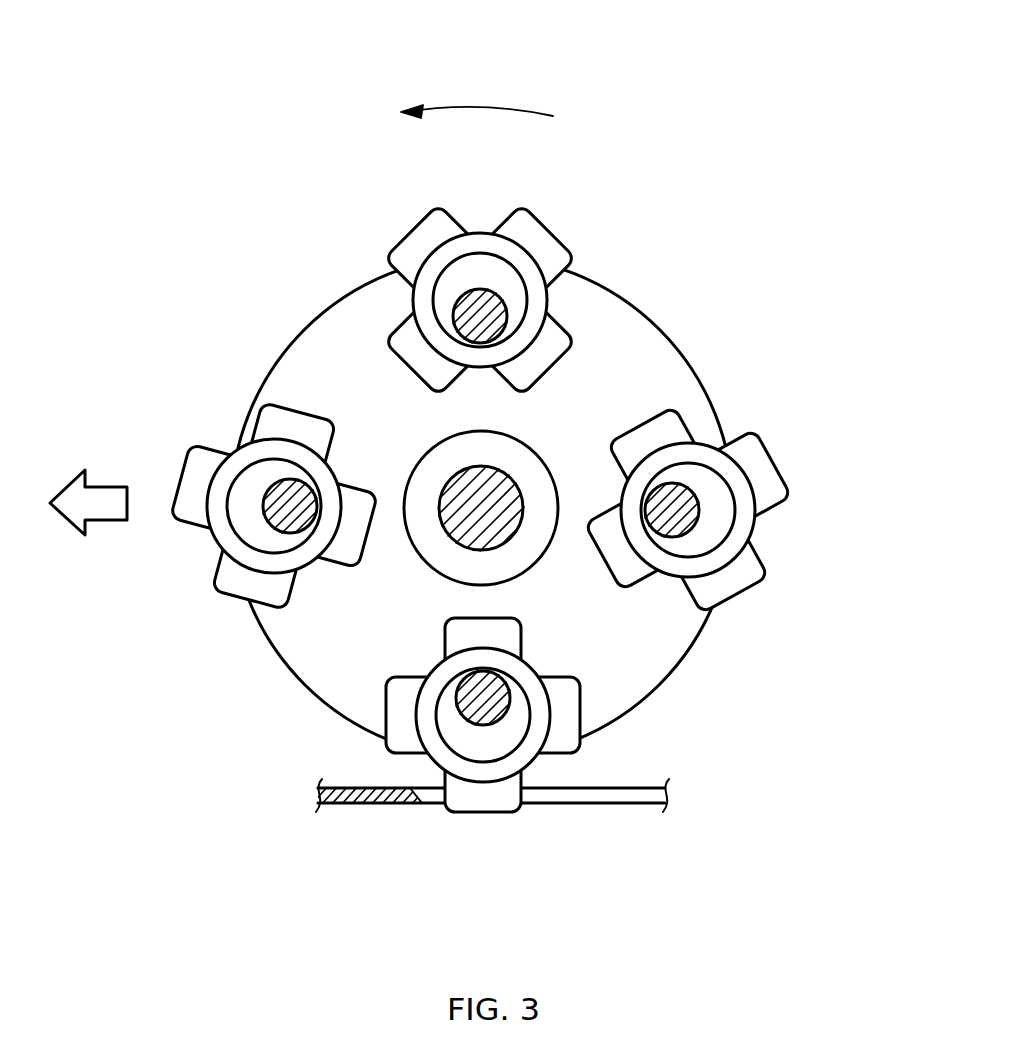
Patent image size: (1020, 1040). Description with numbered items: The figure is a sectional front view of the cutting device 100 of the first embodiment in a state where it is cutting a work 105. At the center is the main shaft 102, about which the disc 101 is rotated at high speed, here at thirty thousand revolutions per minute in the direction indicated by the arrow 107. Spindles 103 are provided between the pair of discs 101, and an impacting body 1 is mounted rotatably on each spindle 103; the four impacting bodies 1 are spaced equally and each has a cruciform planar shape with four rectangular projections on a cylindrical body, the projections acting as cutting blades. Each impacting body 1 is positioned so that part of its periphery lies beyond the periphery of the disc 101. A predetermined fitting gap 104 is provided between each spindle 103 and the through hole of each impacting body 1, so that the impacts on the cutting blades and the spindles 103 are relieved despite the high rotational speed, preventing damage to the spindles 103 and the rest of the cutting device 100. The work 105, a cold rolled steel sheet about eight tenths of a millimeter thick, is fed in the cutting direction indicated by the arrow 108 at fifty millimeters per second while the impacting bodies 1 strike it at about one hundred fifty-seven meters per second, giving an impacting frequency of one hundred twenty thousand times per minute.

The impacting body 1 is at (412, 228).
The cutting device 100 is at (303, 153).
The disc 101 is at (632, 353).
The main shaft 102 is at (520, 553).
The spindle 103 is at (492, 308).
The fitting gap 104 is at (472, 270).
The work 105 is at (318, 797).
The arrow 107 is at (503, 107).
The arrow 108 is at (103, 522).